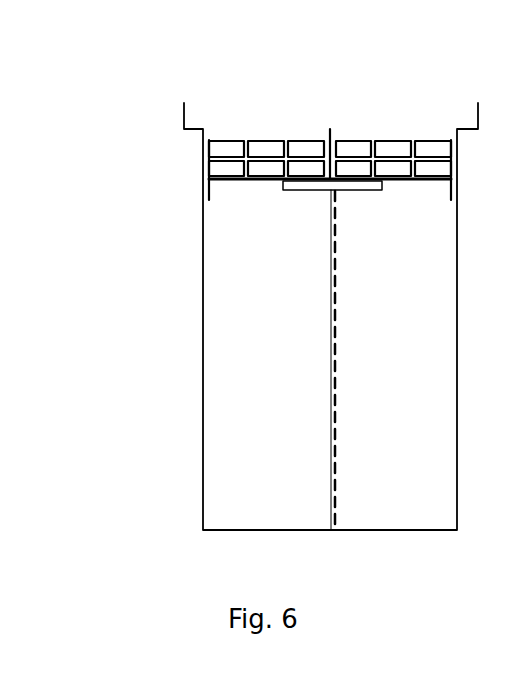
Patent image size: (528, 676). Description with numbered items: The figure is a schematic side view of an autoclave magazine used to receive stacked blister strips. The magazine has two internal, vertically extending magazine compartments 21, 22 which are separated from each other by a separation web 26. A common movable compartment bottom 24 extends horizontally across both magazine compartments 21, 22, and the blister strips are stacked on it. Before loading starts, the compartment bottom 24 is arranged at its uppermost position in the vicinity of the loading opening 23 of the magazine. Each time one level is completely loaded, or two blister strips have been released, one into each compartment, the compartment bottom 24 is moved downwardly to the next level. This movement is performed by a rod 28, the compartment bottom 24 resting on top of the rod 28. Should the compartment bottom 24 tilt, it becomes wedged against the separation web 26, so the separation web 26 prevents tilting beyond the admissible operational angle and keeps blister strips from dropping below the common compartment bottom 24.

The magazine compartment 21 is at (256, 200).
The magazine compartment 22 is at (388, 200).
The loading opening 23 is at (273, 90).
The common movable compartment bottom 24 is at (428, 182).
The separation web 26 is at (330, 400).
The rod 28 is at (335, 265).